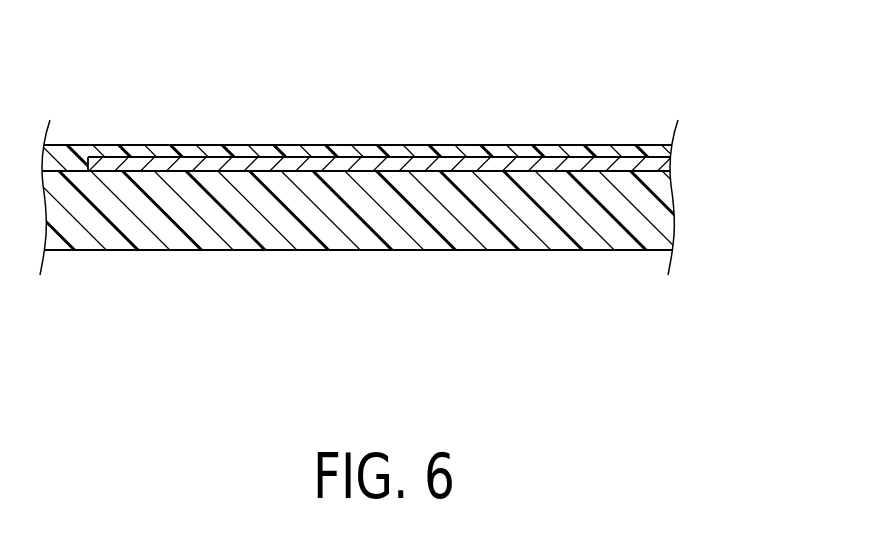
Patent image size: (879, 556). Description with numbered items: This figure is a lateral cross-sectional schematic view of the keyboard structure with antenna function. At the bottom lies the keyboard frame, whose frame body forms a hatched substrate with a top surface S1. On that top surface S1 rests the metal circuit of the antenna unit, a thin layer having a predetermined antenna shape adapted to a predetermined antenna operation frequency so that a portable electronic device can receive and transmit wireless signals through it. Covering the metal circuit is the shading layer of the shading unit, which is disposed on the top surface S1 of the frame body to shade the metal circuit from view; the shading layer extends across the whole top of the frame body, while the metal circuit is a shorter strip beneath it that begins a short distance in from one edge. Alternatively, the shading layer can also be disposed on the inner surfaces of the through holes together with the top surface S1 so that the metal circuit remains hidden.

The top surface S1 is at (643, 158).